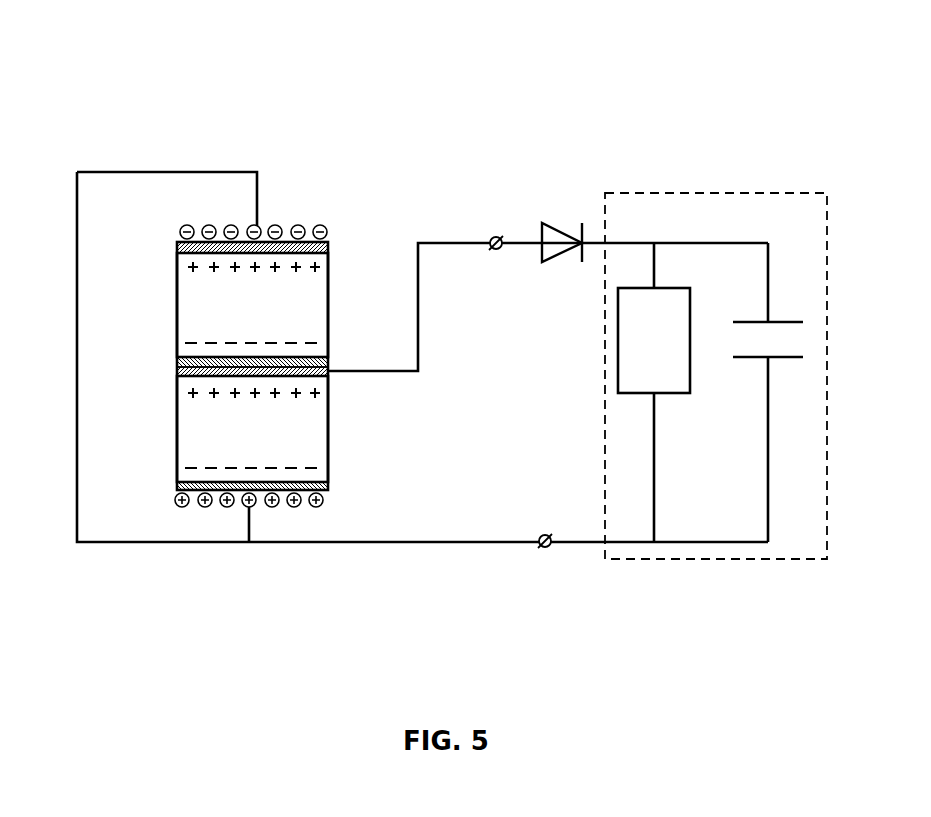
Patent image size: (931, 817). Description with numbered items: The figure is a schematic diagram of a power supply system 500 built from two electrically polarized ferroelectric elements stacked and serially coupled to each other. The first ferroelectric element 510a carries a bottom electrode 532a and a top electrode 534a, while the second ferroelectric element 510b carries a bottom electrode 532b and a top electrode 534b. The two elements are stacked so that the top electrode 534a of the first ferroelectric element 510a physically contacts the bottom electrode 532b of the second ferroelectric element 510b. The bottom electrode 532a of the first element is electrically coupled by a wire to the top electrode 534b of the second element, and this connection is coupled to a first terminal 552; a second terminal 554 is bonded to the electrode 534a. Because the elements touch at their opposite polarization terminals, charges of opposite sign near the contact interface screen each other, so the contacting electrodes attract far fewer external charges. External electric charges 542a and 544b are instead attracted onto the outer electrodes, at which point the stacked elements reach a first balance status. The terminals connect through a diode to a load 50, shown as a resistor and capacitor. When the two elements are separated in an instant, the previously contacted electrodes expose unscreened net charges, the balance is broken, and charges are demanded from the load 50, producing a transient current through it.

The power supply system 500 is at (222, 98).
The first ferroelectric element 510a is at (252, 429).
The second ferroelectric element 510b is at (252, 305).
The bottom electrode 532a is at (177, 486).
The bottom electrode 532b is at (330, 358).
The top electrode 534a is at (177, 372).
The top electrode 534b is at (328, 245).
The external electric charges 542a is at (316, 508).
The external electric charges 544b is at (231, 226).
The first terminal 552 is at (550, 548).
The second terminal 554 is at (500, 238).
The load 50 is at (740, 553).